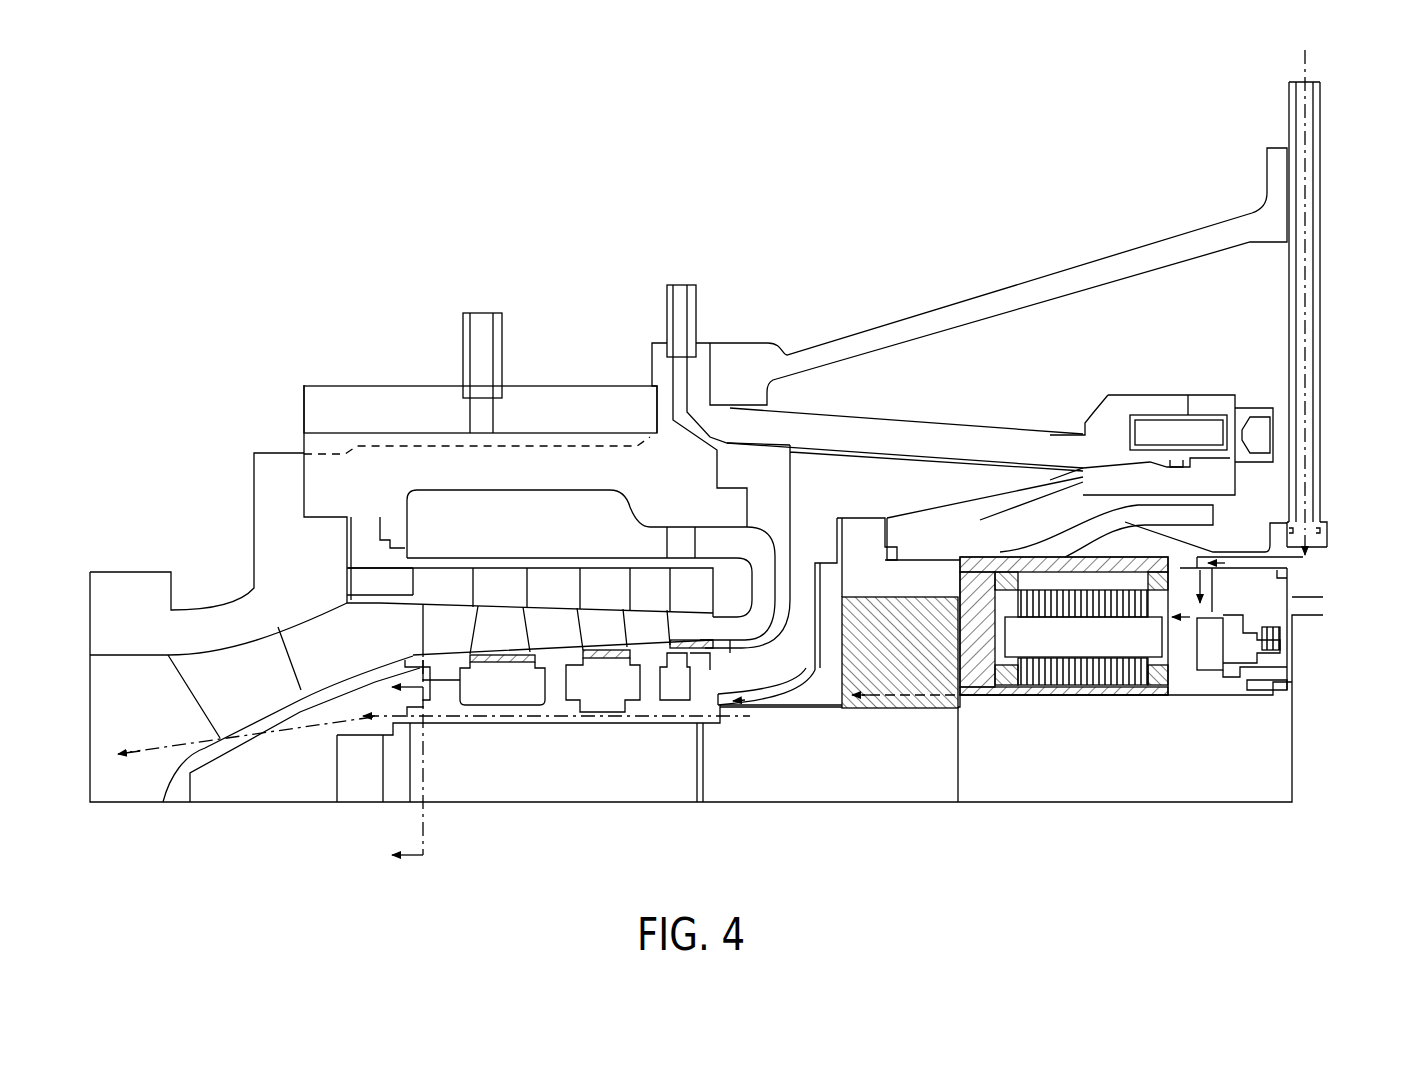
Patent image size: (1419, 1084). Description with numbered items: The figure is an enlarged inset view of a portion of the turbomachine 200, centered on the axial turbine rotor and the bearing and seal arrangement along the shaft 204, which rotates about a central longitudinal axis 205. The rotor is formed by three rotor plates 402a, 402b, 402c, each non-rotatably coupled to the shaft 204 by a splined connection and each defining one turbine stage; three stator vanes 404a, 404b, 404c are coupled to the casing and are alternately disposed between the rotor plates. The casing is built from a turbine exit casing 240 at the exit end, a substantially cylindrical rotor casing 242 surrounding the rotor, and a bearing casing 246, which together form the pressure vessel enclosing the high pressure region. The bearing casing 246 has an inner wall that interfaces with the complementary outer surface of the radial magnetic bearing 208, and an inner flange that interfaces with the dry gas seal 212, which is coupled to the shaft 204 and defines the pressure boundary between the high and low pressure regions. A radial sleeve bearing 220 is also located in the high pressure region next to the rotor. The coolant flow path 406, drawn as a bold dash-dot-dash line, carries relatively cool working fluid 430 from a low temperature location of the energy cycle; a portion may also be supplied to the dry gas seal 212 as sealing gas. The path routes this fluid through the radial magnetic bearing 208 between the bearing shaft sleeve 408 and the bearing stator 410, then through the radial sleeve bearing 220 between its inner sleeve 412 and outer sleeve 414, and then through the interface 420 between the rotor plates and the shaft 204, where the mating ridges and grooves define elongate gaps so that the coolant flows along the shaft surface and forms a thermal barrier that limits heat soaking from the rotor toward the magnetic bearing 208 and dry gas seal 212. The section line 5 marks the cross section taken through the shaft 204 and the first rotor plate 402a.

The turbomachine 200 is at (525, 218).
The shaft 204 is at (995, 786).
The central longitudinal axis 205 is at (1240, 803).
The radial magnetic bearing 208 is at (1058, 535).
The dry gas seal 212 is at (1278, 605).
The radial sleeve bearing 220 is at (853, 553).
The turbine exit casing 240 is at (285, 553).
The rotor casing 242 is at (883, 441).
The bearing casing 246 is at (937, 525).
The first rotor plate 402a is at (443, 695).
The second rotor plate 402b is at (553, 695).
The third rotor plate 402c is at (643, 695).
The first stator vane 404a is at (500, 630).
The second stator vane 404b is at (595, 630).
The third stator vane 404c is at (690, 628).
The coolant flow path 406 is at (1345, 238).
The bearing shaft sleeve 408 is at (1063, 667).
The bearing stator 410 is at (1100, 650).
The inner sleeve 412 is at (877, 702).
The outer sleeve 414 is at (883, 630).
The interface between rotor and shaft 420 is at (489, 762).
The working fluid 430 is at (1312, 62).
The section line 5- 5 is at (396, 766).